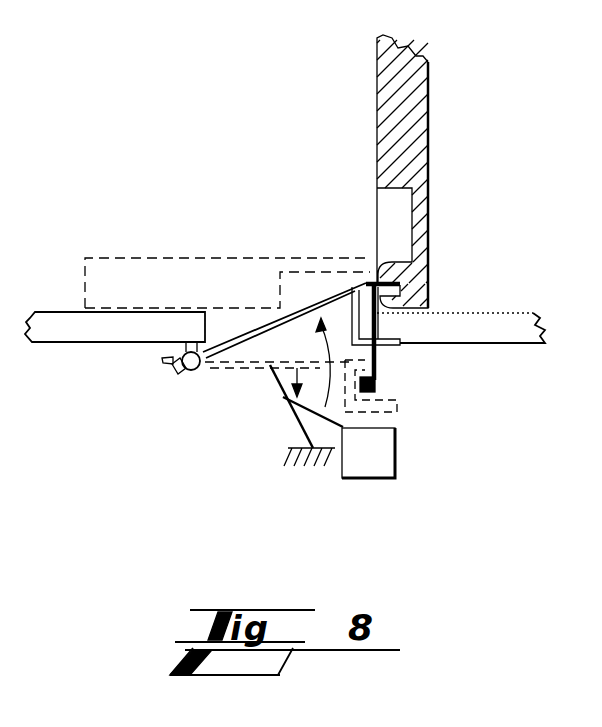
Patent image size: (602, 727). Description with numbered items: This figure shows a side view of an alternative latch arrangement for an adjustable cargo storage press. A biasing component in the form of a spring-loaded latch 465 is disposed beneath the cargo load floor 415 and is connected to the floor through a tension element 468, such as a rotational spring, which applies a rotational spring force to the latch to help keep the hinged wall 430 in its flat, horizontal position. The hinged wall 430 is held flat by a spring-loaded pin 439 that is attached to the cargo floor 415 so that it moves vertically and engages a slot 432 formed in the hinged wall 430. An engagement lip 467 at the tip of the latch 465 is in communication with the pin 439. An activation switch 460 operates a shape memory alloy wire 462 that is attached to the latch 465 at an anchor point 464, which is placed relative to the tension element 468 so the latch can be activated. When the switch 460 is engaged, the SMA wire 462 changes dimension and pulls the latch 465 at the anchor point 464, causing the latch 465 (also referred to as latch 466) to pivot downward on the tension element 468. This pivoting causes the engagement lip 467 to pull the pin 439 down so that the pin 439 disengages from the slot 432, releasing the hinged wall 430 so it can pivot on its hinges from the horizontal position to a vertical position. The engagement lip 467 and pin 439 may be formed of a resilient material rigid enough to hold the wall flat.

The cargo load floor 415 is at (490, 327).
The hinged wall 430 is at (388, 100).
The slot 432 is at (366, 280).
The spring-loaded pin 439 is at (376, 383).
The activation switch 460 is at (360, 480).
The SMA wire 462 is at (278, 385).
The anchor point 464 is at (262, 366).
The spring-loaded latch 465 is at (362, 284).
The latch 466 is at (397, 338).
The engagement lip 467 is at (306, 302).
The tension element 468 is at (188, 373).